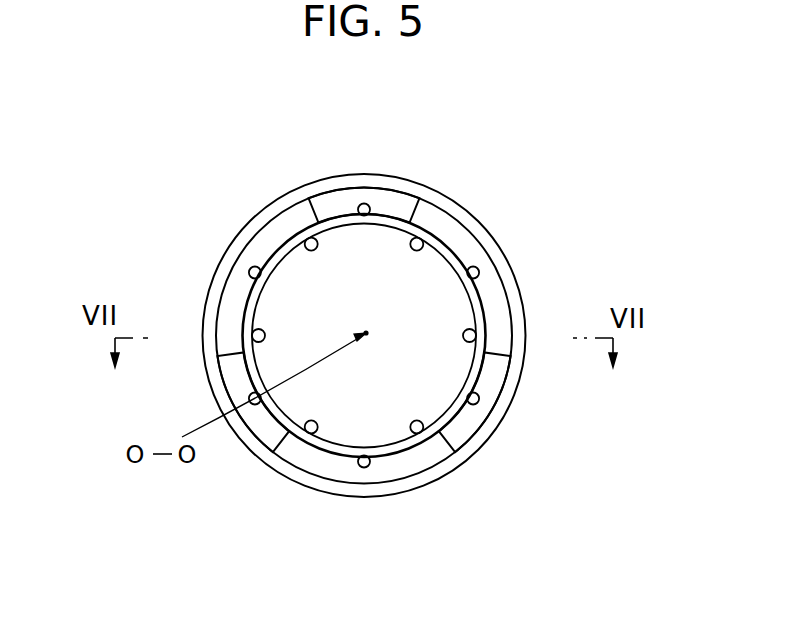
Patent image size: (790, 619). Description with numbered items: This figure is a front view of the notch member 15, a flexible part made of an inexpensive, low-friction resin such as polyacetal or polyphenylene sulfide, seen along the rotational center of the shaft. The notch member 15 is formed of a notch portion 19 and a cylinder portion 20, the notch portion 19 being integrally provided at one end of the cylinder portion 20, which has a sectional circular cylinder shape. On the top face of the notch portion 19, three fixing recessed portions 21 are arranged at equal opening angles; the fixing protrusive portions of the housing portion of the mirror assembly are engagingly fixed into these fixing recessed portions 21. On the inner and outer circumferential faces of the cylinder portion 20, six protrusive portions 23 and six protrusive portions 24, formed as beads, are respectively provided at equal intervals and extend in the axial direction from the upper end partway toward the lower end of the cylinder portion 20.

The notch member 15 is at (262, 206).
The notch portion 19 is at (503, 250).
The cylinder portion 20 is at (483, 307).
The fixing recessed portion 21 is at (466, 238).
The protrusive portion 23 is at (316, 249).
The protrusive portion 24 is at (366, 204).